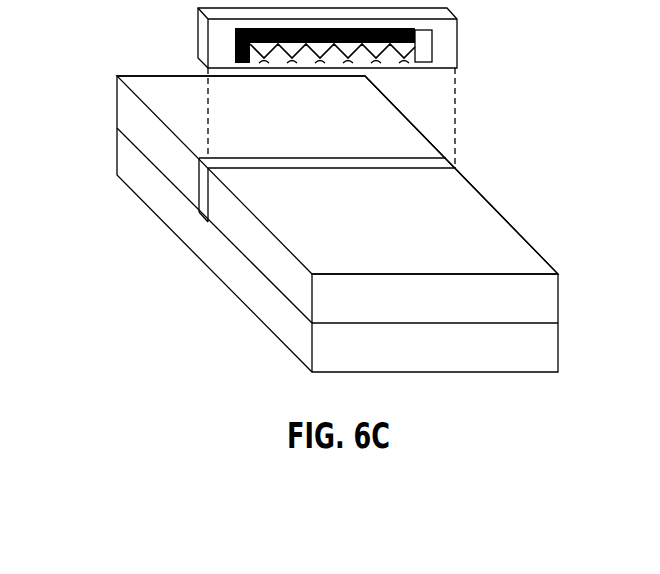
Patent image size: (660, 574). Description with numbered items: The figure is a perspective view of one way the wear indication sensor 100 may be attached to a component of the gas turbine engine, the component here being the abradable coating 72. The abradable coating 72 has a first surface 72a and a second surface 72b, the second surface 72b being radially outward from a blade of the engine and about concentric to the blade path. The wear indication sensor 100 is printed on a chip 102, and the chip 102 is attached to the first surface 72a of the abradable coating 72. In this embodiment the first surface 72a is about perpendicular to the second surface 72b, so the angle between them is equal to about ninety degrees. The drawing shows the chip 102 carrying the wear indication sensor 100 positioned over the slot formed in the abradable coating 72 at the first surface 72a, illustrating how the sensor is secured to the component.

The abradable coating 72 is at (397, 226).
The first surface 72a is at (195, 197).
The second surface 72b is at (165, 95).
The wear indication sensor 100 is at (421, 48).
The chip 102 is at (438, 55).